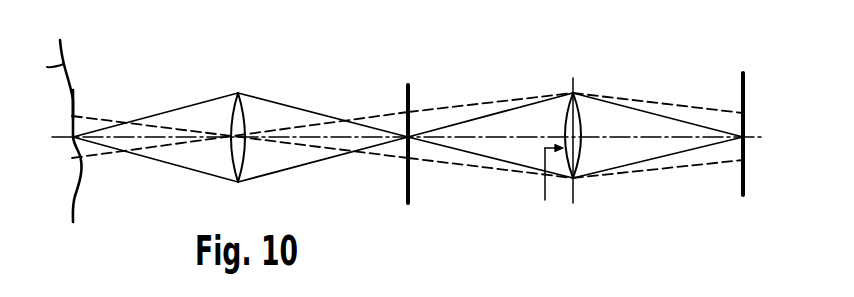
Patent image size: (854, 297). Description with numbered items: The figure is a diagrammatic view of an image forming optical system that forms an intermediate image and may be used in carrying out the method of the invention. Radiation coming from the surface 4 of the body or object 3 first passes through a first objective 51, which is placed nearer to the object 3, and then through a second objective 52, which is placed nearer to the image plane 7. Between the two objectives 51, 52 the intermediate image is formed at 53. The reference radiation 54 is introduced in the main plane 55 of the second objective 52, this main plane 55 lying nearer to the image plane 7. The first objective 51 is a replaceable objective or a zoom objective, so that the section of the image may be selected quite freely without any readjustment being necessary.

The body or object 3 is at (64, 60).
The surface 4 is at (73, 91).
The first objective 51 is at (238, 118).
The intermediate image 53 is at (410, 93).
The second objective 52 is at (567, 113).
The reference radiation 54 is at (541, 189).
The main plane 55 is at (574, 194).
The image plane 7 is at (743, 90).